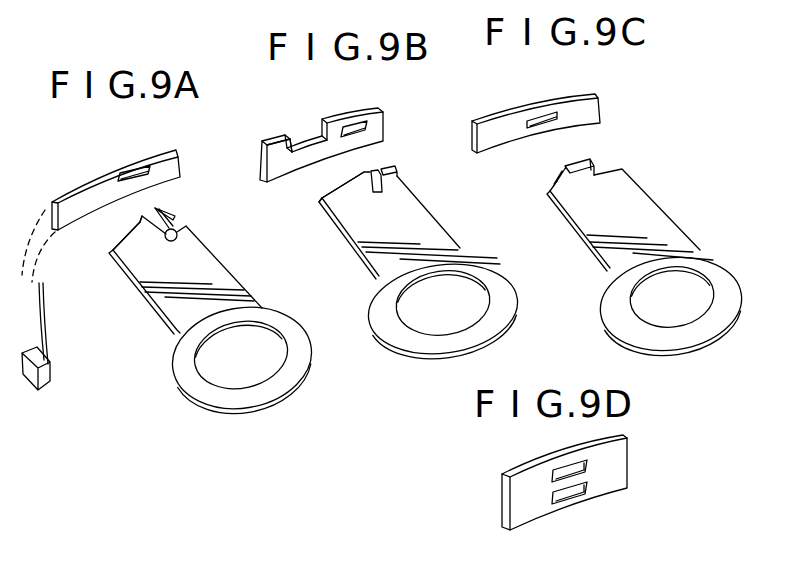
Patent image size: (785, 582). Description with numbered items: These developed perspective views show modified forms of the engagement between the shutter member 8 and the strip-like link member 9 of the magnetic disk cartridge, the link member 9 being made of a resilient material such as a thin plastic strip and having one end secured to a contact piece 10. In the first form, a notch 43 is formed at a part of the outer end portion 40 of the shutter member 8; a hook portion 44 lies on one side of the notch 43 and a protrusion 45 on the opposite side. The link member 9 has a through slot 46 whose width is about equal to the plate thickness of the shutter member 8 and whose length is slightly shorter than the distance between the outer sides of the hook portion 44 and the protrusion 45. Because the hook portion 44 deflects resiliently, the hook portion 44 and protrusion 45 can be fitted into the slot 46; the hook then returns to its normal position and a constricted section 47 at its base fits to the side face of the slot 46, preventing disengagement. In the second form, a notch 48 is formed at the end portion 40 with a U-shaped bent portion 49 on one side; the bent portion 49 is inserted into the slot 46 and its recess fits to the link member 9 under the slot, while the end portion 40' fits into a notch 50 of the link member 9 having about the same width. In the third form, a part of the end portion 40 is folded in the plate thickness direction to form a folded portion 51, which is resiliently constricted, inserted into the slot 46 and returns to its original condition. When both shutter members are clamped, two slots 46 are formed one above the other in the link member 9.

In FIG. 9A, the shutter member 8 is at (184, 362).
In FIG. 9B, the shutter member 8 is at (388, 314).
In FIG. 9C, the shutter member 8 is at (630, 313).
In FIG. 9A, the link member 9 is at (180, 152).
In FIG. 9B, the link member 9 is at (384, 112).
In FIG. 9C, the link member 9 is at (601, 99).
In FIG. 9A, the contact piece 10 is at (36, 348).
In FIG. 9A, the outer end portion 40 is at (103, 245).
In FIG. 9B, the outer end portion 40 is at (324, 183).
In FIG. 9C, the outer end portion 40 is at (527, 174).
In FIG. 9B, the end portion 40' is at (300, 211).
In FIG. 9A, the notch 43 is at (157, 208).
In FIG. 9A, the hook portion 44 is at (178, 214).
In FIG. 9A, the protrusion 45 is at (139, 220).
In FIG. 9A, the through slot 46 is at (132, 167).
In FIG. 9B, the through slot 46 is at (362, 112).
In FIG. 9C, the through slot 46 is at (542, 110).
In FIG. 9A, the constricted section 47 is at (178, 231).
In FIG. 9B, the notch 48 is at (367, 178).
In FIG. 9B, the U-shaped bent portion 49 is at (396, 173).
In FIG. 9B, the notch 50 is at (305, 146).
In FIG. 9C, the folded portion 51 is at (592, 163).